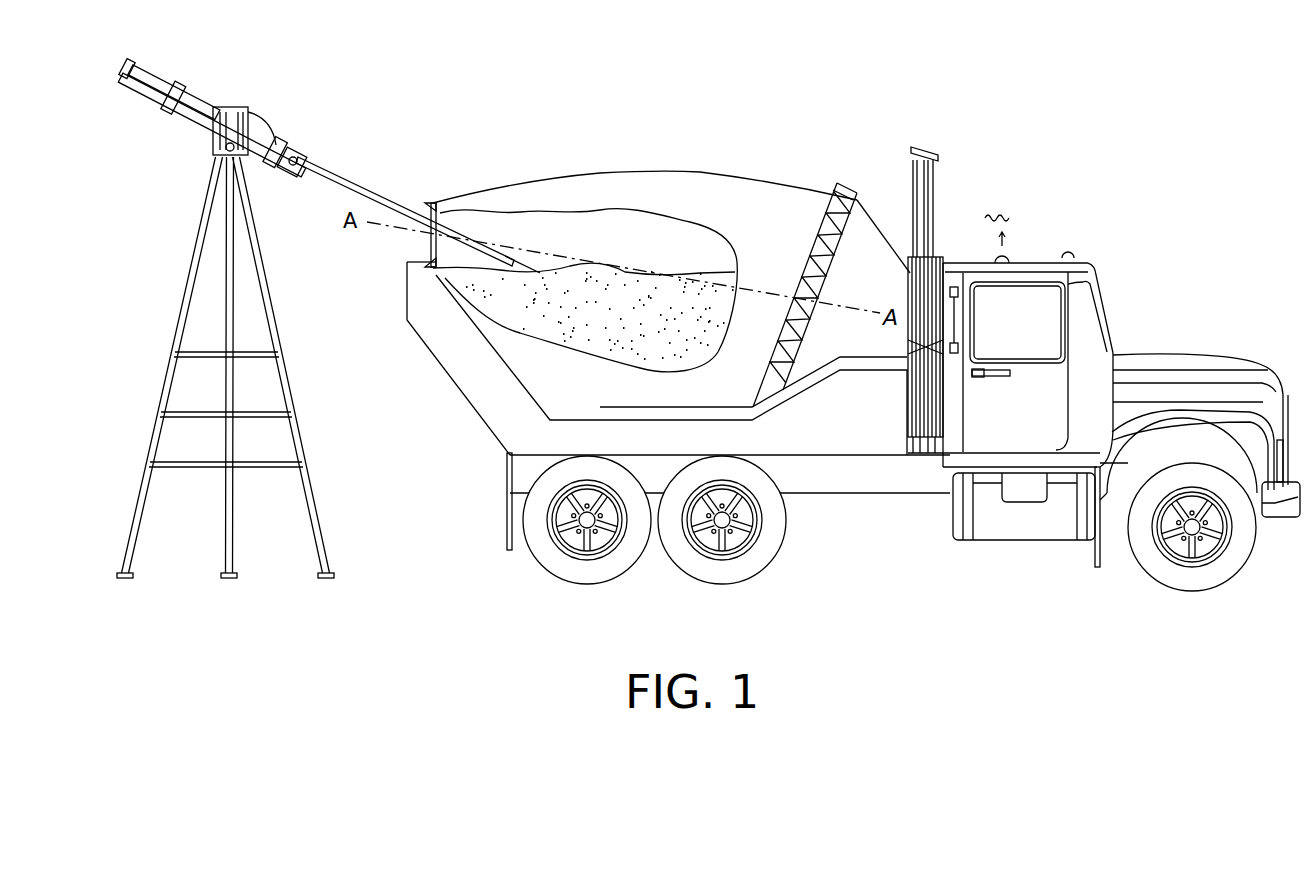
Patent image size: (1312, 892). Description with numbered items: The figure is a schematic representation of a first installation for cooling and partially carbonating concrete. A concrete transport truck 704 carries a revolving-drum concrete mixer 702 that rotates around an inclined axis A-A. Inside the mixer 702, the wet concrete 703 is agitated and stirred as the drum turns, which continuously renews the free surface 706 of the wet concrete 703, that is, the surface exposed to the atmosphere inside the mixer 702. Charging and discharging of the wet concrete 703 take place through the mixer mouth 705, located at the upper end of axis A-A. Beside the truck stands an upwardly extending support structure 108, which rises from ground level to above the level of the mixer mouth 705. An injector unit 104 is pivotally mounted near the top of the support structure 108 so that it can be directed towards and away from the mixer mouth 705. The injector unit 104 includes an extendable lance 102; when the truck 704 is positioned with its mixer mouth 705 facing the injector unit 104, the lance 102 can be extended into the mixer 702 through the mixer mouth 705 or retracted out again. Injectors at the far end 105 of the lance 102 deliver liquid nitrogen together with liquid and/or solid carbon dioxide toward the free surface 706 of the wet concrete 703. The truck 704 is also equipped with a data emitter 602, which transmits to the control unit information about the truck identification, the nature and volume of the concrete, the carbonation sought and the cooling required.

The extendable lance 102 is at (379, 188).
The injector unit 104 is at (193, 140).
The far end of lance 105 is at (519, 262).
The support structure 108 is at (313, 547).
The data emitter 602 is at (1010, 256).
The revolving-drum concrete mixer 702 is at (660, 172).
The wet concrete 703 is at (600, 315).
The concrete transport truck 704 is at (1205, 356).
The mixer mouth 705 is at (427, 229).
The free surface 706 is at (620, 268).